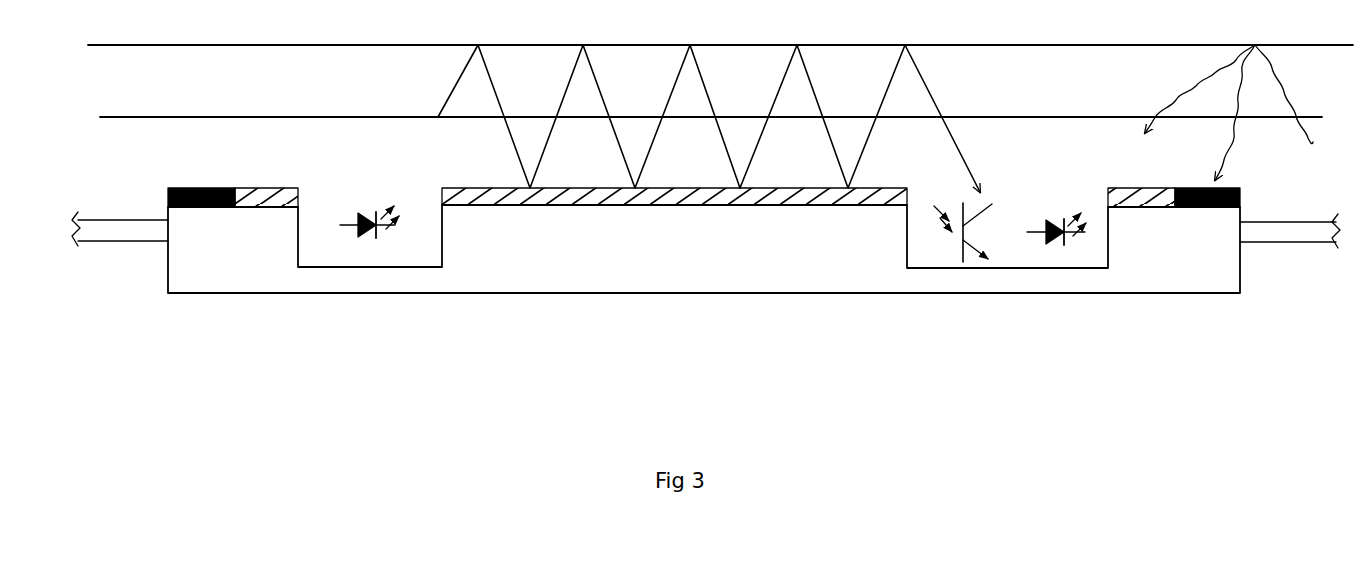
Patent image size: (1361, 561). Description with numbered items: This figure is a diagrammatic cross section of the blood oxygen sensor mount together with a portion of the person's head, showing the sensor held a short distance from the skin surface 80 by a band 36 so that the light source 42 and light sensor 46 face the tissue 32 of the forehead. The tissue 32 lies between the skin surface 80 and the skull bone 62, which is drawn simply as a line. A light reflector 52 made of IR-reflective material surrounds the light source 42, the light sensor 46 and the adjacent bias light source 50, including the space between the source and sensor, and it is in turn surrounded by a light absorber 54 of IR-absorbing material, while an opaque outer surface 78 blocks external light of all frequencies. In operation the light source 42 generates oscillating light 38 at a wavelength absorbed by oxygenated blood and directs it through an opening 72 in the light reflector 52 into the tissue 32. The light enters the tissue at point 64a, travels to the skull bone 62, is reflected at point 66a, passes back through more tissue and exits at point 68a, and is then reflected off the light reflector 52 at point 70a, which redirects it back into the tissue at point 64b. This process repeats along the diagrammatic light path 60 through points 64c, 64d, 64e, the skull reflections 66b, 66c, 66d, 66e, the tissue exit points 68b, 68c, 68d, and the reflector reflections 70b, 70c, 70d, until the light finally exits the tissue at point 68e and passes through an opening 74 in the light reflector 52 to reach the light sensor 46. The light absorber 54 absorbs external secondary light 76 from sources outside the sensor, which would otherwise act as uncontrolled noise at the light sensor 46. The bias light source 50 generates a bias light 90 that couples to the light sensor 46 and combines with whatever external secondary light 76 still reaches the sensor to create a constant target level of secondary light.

The tissue 32 is at (213, 104).
The band 36 is at (113, 230).
The oscillating light 38 is at (432, 134).
The light source 42 is at (386, 228).
The light sensor 46 is at (958, 253).
The bias light source 50 is at (1076, 235).
The light reflector 52 is at (259, 187).
The light absorber 54 is at (197, 187).
The light path 60 is at (460, 72).
The skull bone 62 is at (1082, 45).
The point 64a is at (438, 117).
The point 64b is at (557, 117).
The point 64c is at (662, 117).
The point 64d is at (767, 117).
The point 64e is at (875, 117).
The point 66a is at (483, 40).
The point 66b is at (588, 40).
The point 66c is at (695, 40).
The point 66d is at (802, 40).
The point 66e is at (910, 40).
The point 68a is at (506, 117).
The point 68b is at (611, 117).
The point 68c is at (718, 117).
The point 68d is at (825, 117).
The point 68e is at (933, 117).
The point 70a is at (528, 205).
The point 70b is at (633, 205).
The point 70c is at (738, 205).
The point 70d is at (846, 205).
The opening 72 is at (317, 186).
The opening 74 is at (907, 197).
The external secondary light 76 is at (1196, 86).
The outer surface 78 is at (672, 293).
The skin surface 80 is at (305, 117).
The bias light 90 is at (1086, 192).